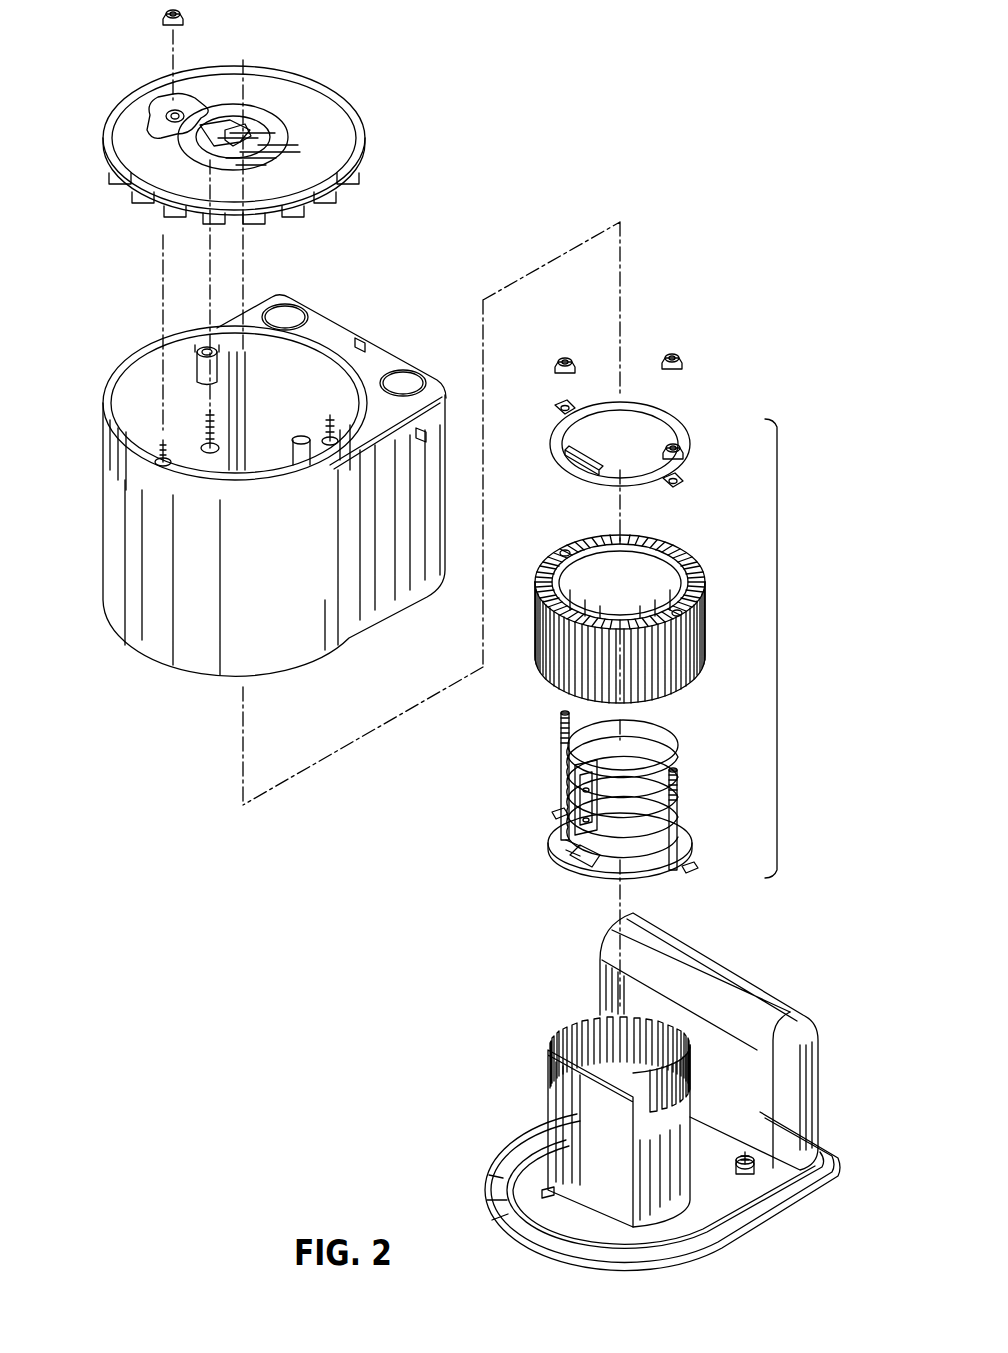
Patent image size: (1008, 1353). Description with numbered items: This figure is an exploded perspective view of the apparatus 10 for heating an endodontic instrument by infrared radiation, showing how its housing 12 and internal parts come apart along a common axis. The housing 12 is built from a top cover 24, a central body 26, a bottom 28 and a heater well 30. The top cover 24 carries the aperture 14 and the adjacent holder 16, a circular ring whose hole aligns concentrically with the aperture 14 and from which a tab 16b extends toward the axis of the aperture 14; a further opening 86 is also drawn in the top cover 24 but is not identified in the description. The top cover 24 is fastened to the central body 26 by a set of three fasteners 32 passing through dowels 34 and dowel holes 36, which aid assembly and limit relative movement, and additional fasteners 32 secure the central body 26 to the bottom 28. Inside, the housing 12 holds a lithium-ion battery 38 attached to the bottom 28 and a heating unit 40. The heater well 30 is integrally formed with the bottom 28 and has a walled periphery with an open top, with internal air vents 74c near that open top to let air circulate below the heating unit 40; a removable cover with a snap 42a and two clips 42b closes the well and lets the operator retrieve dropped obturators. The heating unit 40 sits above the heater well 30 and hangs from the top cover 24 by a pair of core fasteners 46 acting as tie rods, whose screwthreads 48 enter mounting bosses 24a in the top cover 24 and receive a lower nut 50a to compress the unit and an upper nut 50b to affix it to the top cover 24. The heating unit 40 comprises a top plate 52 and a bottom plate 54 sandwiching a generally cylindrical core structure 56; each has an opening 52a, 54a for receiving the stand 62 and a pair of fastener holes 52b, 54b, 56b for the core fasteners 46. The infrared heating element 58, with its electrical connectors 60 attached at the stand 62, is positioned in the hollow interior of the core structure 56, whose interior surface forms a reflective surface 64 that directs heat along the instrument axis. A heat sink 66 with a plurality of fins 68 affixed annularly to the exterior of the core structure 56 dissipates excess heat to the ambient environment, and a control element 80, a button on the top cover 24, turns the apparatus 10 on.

The apparatus 10 is at (707, 186).
The housing 12 is at (450, 759).
The aperture 14 is at (262, 125).
The holder 16 is at (225, 137).
The tab 16b is at (225, 144).
The top cover 24 is at (124, 128).
The mounting boss 24a is at (170, 113).
The central body 26 is at (124, 640).
The bottom 28 is at (636, 1184).
The heater well 30 is at (586, 1107).
The fastener 32 is at (324, 418).
The dowel 34 is at (160, 227).
The dowel hole 36 is at (200, 367).
The battery 38 is at (710, 962).
The heating unit 40 is at (788, 648).
The snap 42a is at (715, 1152).
The clip 42b is at (545, 1190).
The core fastener 46 is at (562, 764).
The screwthread 48 is at (560, 733).
The lower nut 50a is at (558, 365).
The upper nut 50b is at (167, 44).
The top plate 52 is at (627, 434).
The opening 52a is at (576, 457).
The fastener holes 52b is at (560, 409).
The bottom plate 54 is at (618, 859).
The opening 54a is at (586, 867).
The fastener holes 54b is at (556, 810).
The core structure 56 is at (626, 608).
The fastener holes 56b is at (564, 552).
The infrared heating element 58 is at (618, 811).
The electrical connectors 60 is at (580, 852).
The stand 62 is at (590, 772).
The reflective surface 64 is at (603, 570).
The heat sink 66 is at (700, 605).
The fins 68 is at (575, 680).
The internal air vent 74c is at (592, 1020).
The control element 80 is at (411, 380).
The housing opening 86 is at (292, 312).